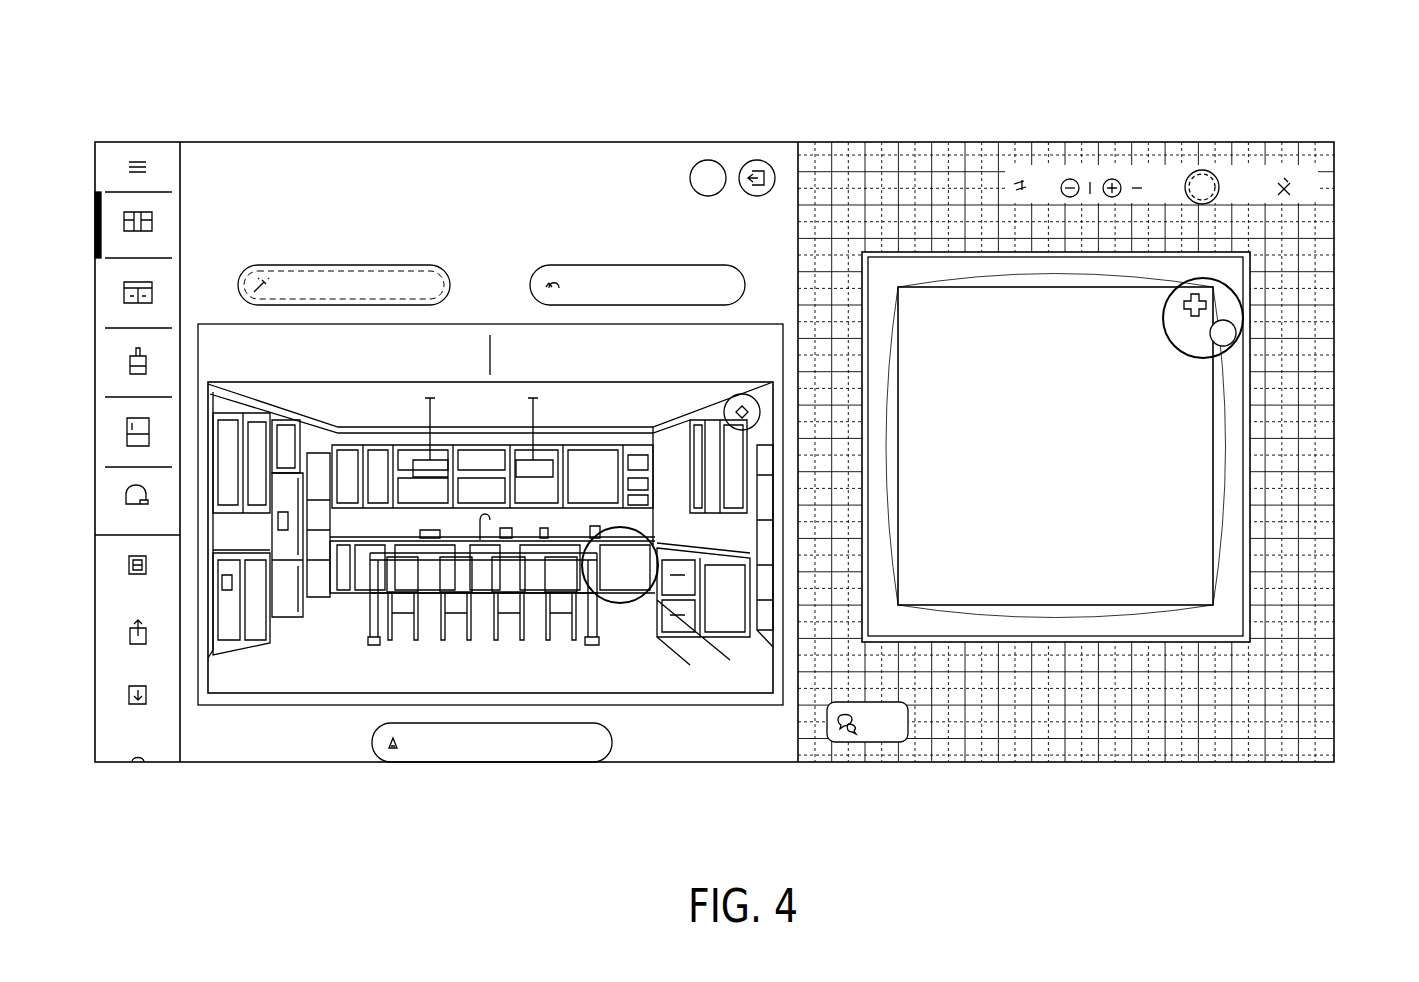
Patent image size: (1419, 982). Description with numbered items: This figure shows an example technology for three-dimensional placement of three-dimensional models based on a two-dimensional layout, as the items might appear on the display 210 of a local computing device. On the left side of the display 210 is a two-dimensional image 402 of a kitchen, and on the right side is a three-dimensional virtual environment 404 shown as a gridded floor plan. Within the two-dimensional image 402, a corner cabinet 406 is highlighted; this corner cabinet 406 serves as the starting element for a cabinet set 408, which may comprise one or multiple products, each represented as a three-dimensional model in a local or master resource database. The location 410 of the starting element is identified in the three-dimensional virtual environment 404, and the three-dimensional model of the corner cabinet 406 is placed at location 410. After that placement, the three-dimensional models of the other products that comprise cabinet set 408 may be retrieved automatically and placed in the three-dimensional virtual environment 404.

The display 210 is at (243, 96).
The 2D image 402 is at (360, 672).
The 3D virtual environment 404 is at (1007, 588).
The corner cabinet 406 is at (624, 604).
The cabinet set 408 is at (484, 482).
The location 410 is at (1240, 284).